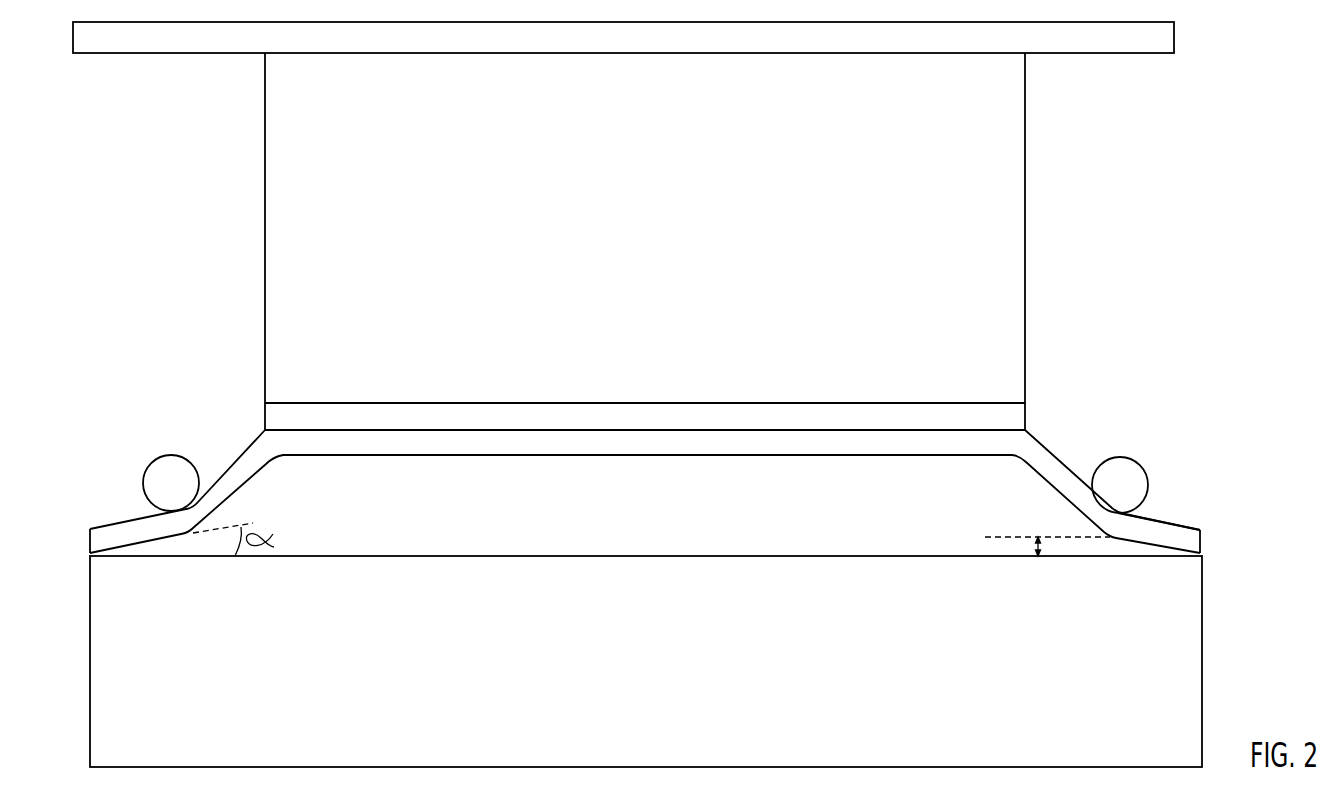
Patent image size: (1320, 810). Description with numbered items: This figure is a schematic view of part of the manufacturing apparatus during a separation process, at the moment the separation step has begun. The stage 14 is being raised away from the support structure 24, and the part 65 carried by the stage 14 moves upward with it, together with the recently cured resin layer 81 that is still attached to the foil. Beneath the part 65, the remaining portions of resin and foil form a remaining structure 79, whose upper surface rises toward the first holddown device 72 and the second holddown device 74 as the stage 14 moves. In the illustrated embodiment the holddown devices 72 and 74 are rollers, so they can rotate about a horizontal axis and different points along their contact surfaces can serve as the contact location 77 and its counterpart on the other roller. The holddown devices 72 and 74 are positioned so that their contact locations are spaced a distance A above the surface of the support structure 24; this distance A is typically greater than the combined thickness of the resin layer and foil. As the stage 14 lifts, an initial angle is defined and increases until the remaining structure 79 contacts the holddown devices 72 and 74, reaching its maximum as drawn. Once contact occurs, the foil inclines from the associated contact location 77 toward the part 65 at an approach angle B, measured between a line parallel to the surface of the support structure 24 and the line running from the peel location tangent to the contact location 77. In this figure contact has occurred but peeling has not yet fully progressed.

The stage 14 is at (1174, 37).
The part 65 is at (988, 198).
The recently cured resin layer 81 is at (1027, 416).
The remaining structure 79 is at (412, 442).
The first holddown device 72 is at (148, 458).
The second holddown device 74 is at (1147, 473).
The contact location 77 is at (1120, 515).
The support structure 24 is at (1168, 658).
The distance A is at (1037, 545).
The approach angle β B is at (1023, 455).